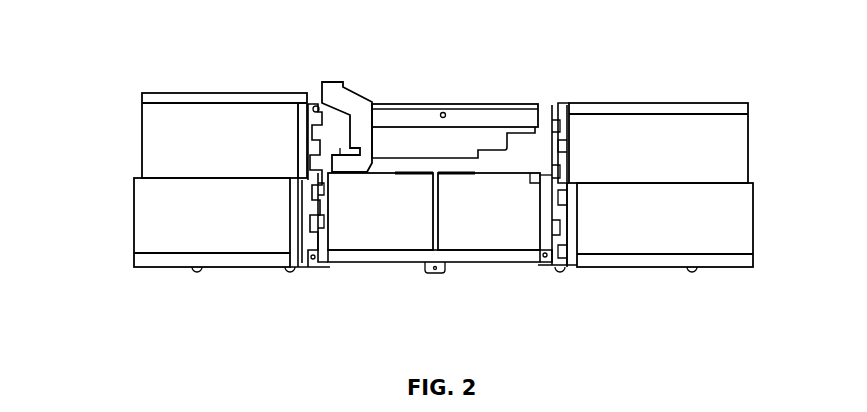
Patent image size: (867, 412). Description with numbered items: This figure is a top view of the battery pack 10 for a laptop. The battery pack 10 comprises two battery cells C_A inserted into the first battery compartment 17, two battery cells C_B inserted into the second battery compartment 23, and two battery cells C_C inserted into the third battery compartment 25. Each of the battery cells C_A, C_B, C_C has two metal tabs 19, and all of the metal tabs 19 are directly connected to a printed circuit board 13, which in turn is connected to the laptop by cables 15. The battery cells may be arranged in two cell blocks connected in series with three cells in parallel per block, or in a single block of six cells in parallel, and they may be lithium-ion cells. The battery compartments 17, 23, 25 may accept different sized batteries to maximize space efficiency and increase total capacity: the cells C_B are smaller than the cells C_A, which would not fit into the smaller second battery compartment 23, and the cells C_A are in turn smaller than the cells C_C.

The battery pack 10 is at (713, 70).
The printed circuit board 13 is at (312, 193).
The cables 15 is at (328, 90).
The first battery compartment 17 is at (118, 82).
The metal tabs 19 is at (555, 153).
The second battery compartment 23 is at (528, 282).
The third battery compartment 25 is at (777, 82).